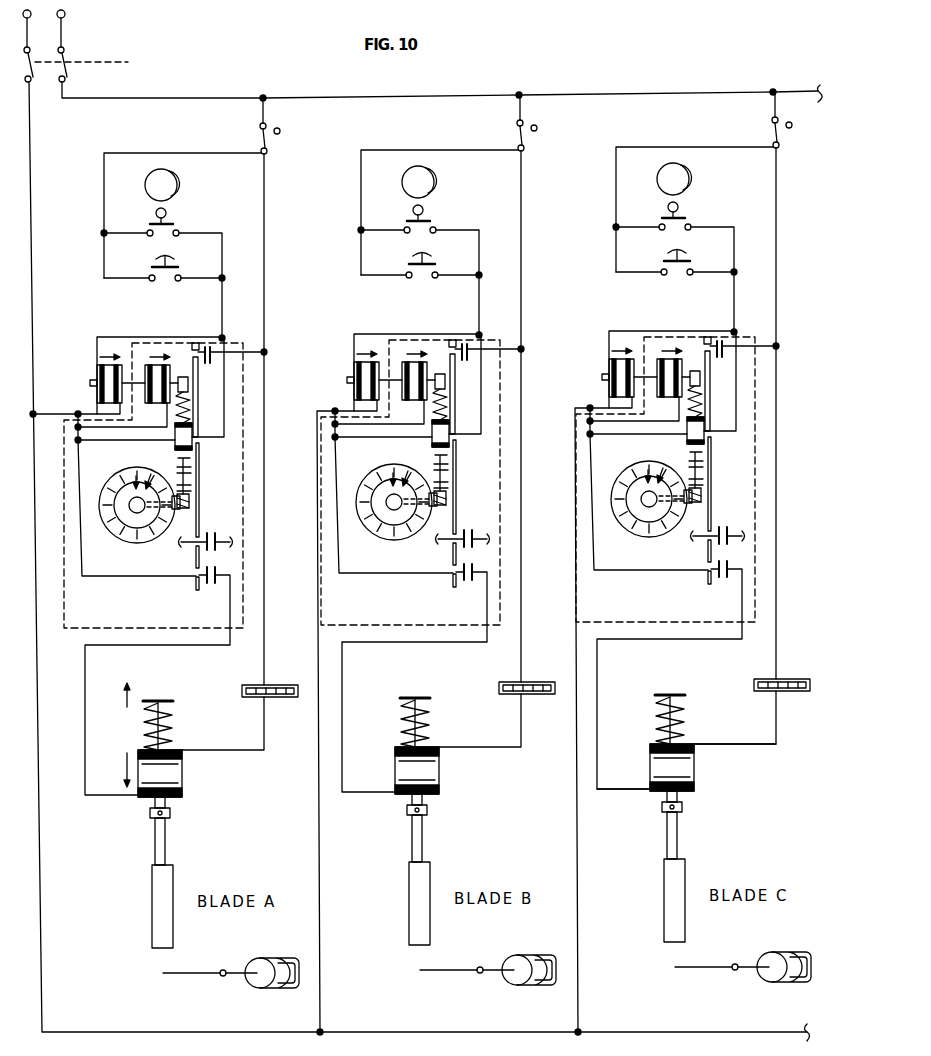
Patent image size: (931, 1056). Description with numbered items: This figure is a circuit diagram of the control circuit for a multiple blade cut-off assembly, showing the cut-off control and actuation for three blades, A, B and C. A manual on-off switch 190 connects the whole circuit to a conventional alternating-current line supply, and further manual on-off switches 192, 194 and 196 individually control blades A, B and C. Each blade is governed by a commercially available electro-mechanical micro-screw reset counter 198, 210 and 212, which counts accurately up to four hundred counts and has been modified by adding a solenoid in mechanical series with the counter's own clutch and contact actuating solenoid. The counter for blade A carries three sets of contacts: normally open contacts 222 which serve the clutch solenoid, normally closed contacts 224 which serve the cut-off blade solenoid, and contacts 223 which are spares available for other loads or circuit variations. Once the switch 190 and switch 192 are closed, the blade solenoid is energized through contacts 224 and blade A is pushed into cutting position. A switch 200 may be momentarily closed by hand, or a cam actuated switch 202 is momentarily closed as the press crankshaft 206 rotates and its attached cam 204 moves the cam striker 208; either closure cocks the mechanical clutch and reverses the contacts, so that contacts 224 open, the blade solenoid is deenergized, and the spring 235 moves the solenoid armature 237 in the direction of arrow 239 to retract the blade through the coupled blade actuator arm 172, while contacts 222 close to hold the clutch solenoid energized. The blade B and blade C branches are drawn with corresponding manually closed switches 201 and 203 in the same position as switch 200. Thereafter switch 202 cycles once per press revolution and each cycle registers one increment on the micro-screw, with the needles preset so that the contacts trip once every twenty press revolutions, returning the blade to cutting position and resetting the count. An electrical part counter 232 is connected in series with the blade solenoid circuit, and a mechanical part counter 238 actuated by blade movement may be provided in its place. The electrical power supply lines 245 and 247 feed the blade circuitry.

The manual on-off switch 190 is at (66, 57).
The manual on-off switch 192 is at (272, 131).
The manual on-off switch 194 is at (543, 123).
The manual on-off switch 196 is at (798, 120).
The electro-mechanical counter 198 is at (126, 627).
The electro-mechanical counter 210 is at (410, 482).
The electro-mechanical counter 212 is at (665, 479).
The switch 200 is at (150, 283).
The reset push button switch 201 is at (421, 279).
The reset push button switch 203 is at (676, 276).
The cam actuated switch 202 is at (174, 221).
The cam 204 is at (176, 181).
The press crankshaft 206 is at (178, 191).
The cam striker 208 is at (154, 222).
The electrical contacts 222 is at (206, 342).
The electrical contacts 223 is at (232, 533).
The electrical contacts 224 is at (213, 593).
The electrical part counter 232 is at (265, 684).
The spring 235 is at (177, 720).
The solenoid armature 237 is at (181, 686).
The arrow 239 is at (120, 728).
The blade actuator arm 172 is at (166, 844).
The mechanical part counter 238 is at (262, 988).
The electrical power supply line 245 is at (745, 764).
The electrical power supply line 247 is at (623, 816).